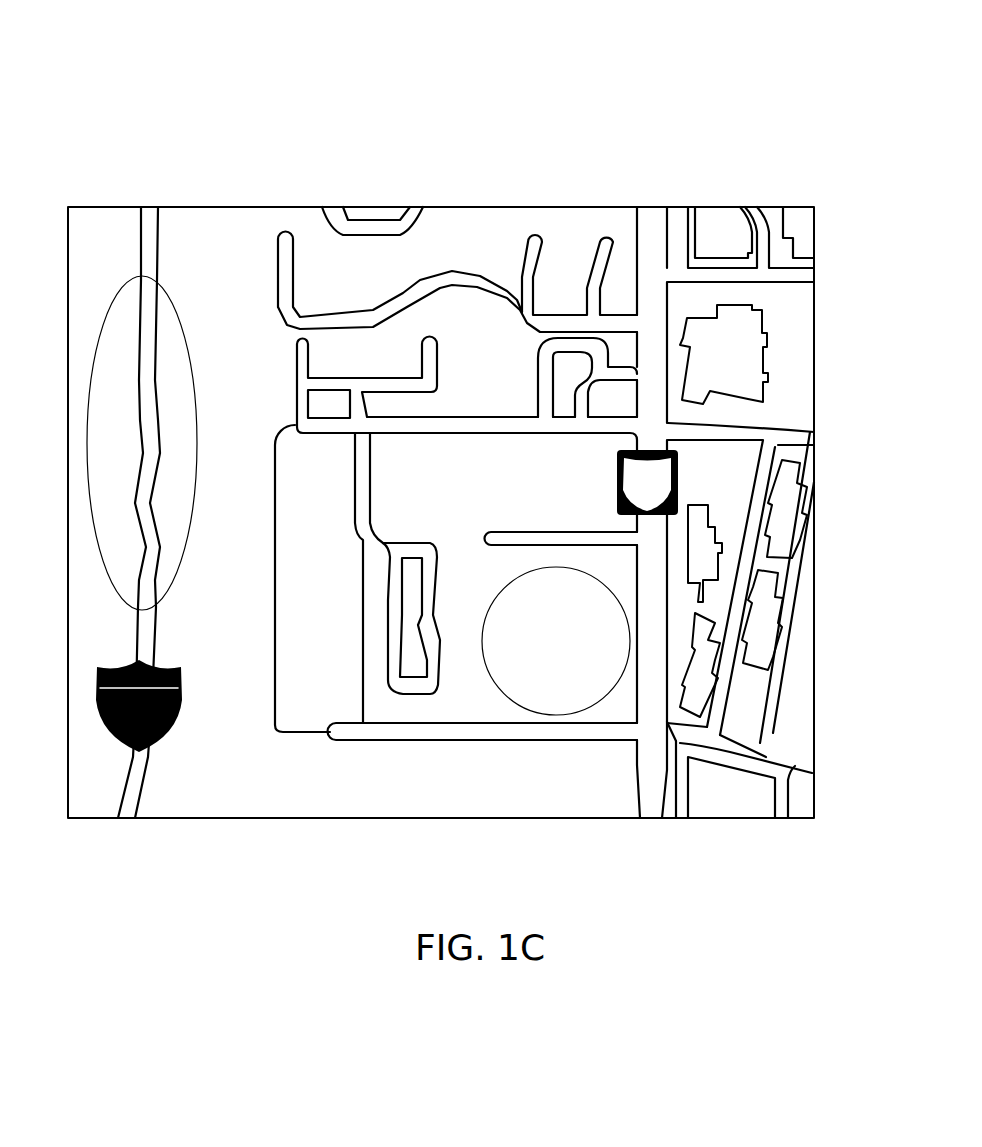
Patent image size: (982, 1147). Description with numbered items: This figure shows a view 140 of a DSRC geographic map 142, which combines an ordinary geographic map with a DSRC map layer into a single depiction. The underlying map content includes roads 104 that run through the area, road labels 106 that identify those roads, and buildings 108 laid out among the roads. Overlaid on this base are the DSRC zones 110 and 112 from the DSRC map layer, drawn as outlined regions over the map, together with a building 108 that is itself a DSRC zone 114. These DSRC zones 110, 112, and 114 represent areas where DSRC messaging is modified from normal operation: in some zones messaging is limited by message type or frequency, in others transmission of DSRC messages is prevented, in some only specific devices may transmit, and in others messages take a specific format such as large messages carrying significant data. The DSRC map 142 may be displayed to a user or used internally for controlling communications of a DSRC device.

The view 140 is at (515, 75).
The roads 104 is at (149, 206).
The DSRC geographic map 142 is at (371, 206).
The DSRC zone 110 is at (179, 316).
The DSRC zone 114 is at (753, 313).
The buildings 108 is at (767, 367).
The road labels 106 is at (616, 478).
The DSRC zone 112 is at (509, 582).